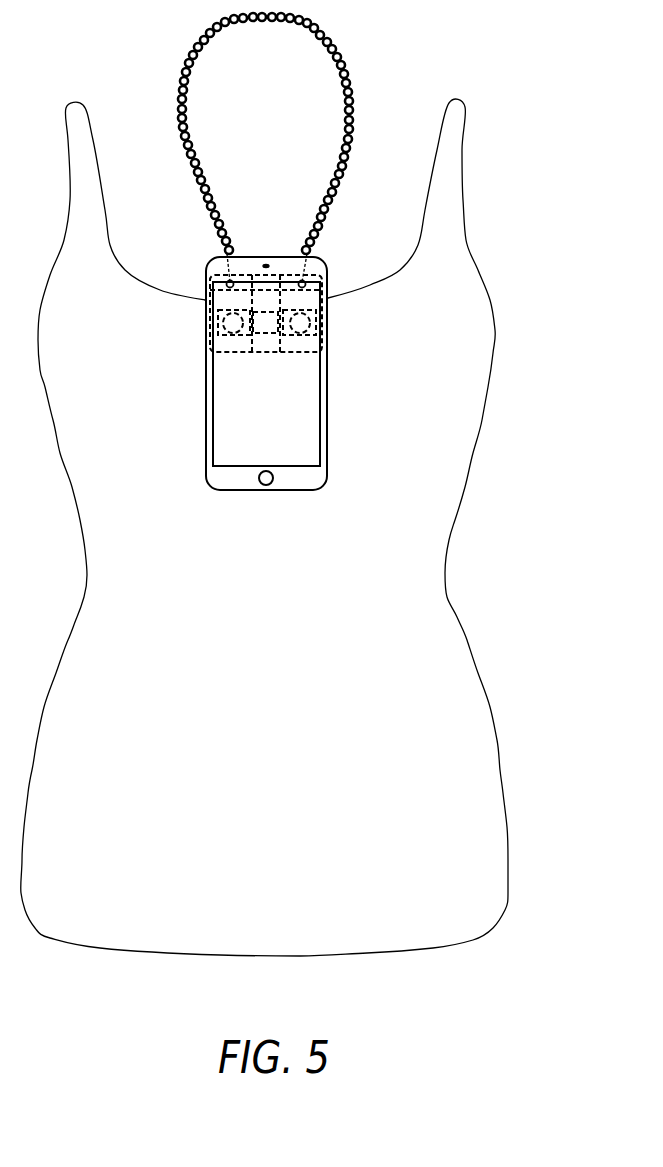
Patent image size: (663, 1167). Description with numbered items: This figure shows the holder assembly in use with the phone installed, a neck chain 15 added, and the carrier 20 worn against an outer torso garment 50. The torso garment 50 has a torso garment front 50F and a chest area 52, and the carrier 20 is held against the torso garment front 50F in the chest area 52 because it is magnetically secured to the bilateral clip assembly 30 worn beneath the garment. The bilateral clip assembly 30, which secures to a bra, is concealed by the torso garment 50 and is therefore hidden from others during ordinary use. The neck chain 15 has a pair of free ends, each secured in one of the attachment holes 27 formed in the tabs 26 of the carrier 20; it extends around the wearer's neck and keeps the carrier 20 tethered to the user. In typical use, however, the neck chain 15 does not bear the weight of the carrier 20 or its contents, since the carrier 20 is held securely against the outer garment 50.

The neck chain 15 is at (345, 68).
The carrier 20 is at (258, 290).
The tabs 26 is at (298, 246).
The attachment holes 27 is at (322, 278).
The bilateral clip assembly 30 is at (271, 335).
The torso garment 50 is at (495, 330).
The torso garment front 50F is at (415, 458).
The chest area 52 is at (372, 332).